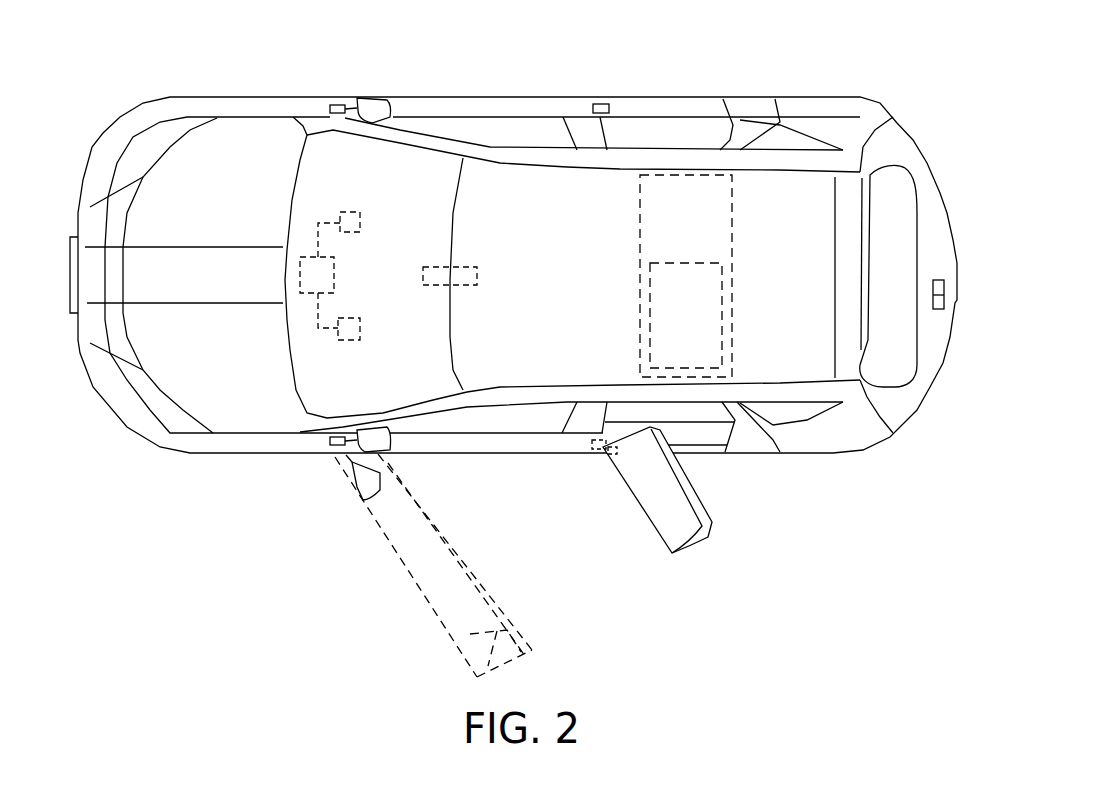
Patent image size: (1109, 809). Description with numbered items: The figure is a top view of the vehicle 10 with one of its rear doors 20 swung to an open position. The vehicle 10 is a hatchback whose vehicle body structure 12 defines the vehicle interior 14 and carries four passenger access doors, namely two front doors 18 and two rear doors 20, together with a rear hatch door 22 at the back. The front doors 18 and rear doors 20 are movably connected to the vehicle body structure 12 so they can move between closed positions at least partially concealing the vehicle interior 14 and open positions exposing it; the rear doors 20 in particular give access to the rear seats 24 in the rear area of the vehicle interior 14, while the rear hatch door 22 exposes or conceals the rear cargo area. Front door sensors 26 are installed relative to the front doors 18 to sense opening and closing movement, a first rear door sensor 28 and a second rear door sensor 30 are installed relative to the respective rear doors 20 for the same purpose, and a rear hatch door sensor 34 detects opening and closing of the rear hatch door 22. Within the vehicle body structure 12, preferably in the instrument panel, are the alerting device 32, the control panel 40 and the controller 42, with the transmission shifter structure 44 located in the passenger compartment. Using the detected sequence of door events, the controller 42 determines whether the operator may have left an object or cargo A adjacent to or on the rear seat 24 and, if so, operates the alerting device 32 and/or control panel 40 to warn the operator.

The vehicle 10 is at (758, 58).
The vehicle body structure 12 is at (597, 348).
The vehicle interior 14 is at (504, 125).
The front doors 18 is at (440, 107).
The rear doors 20 is at (683, 108).
The rear hatch door 22 is at (933, 223).
The rear seats 24 is at (640, 213).
The front door sensor 26 is at (330, 106).
The first rear door sensor 28 is at (594, 445).
The second rear door sensor 30 is at (590, 107).
The alerting device 32 is at (355, 210).
The rear hatch door sensor 34 is at (944, 302).
The control panel 40 is at (353, 340).
The controller 42 is at (325, 270).
The transmission shifter structure 44 is at (467, 285).
The object or cargo A is at (724, 285).